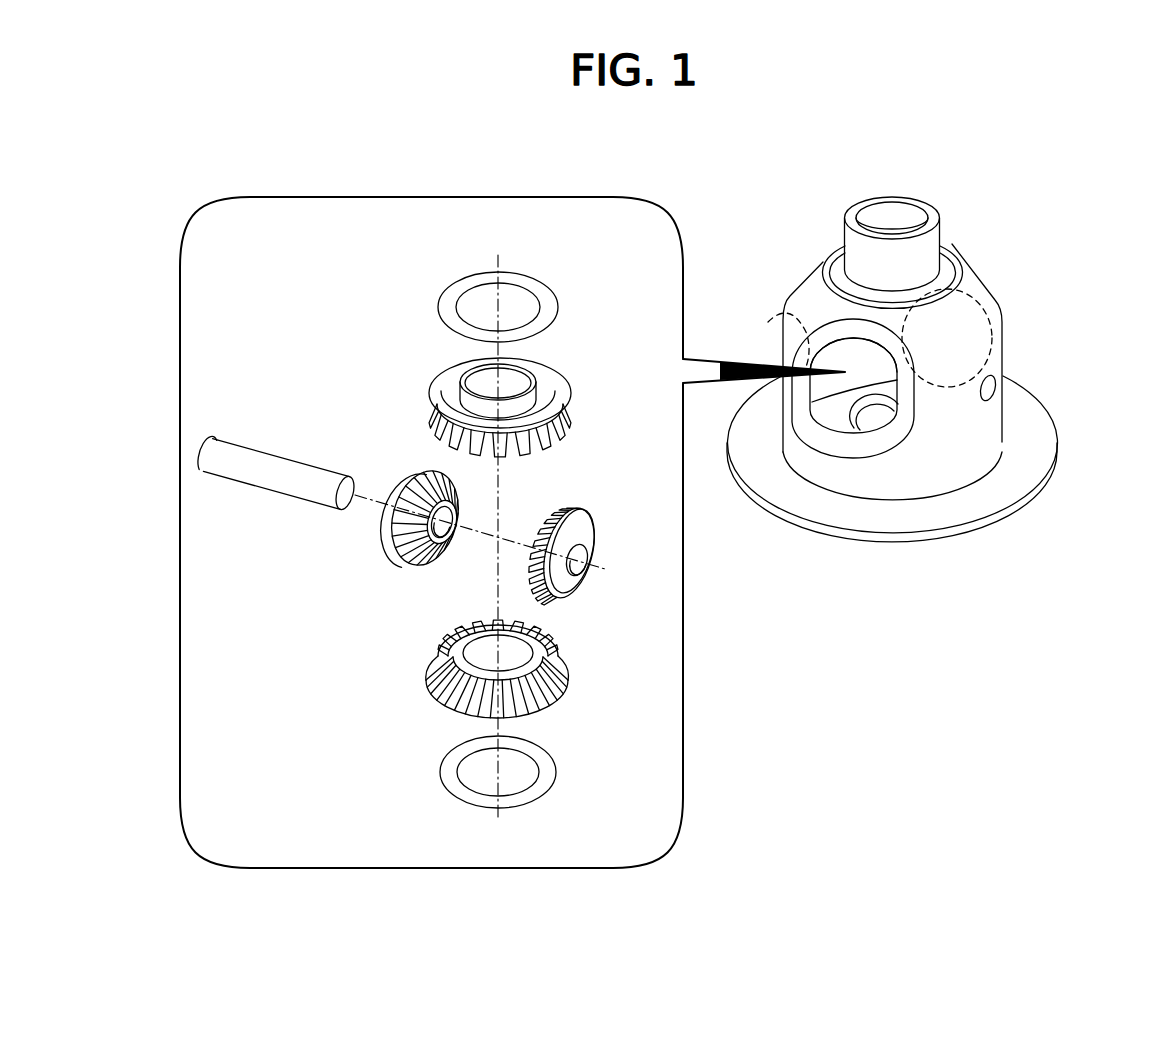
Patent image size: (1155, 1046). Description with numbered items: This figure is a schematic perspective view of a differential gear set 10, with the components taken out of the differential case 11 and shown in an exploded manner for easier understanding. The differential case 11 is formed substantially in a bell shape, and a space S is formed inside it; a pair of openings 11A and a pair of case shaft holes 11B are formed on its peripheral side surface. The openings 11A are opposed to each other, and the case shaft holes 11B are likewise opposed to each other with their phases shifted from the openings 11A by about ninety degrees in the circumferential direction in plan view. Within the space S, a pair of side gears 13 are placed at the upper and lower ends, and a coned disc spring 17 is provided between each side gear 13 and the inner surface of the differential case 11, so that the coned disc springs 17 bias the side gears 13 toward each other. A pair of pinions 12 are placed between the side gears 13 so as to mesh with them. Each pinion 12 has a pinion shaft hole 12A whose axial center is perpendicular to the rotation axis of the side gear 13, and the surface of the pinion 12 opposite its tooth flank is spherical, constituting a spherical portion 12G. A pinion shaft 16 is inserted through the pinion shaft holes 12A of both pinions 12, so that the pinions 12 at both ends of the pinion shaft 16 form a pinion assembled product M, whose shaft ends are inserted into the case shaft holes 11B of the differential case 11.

The differential gear set 10 is at (922, 392).
The differential case 11 is at (889, 392).
The opening 11A is at (1003, 322).
The case shaft hole 11B is at (1000, 382).
The pinion 12 is at (496, 539).
The pinion shaft hole 12A is at (515, 570).
The spherical portion 12G is at (412, 481).
The side gear 13 is at (546, 385).
The pinion shaft 16 is at (304, 474).
The coned disc spring 17 is at (531, 283).
The pinion assembled product M is at (322, 574).
The space S is at (838, 353).